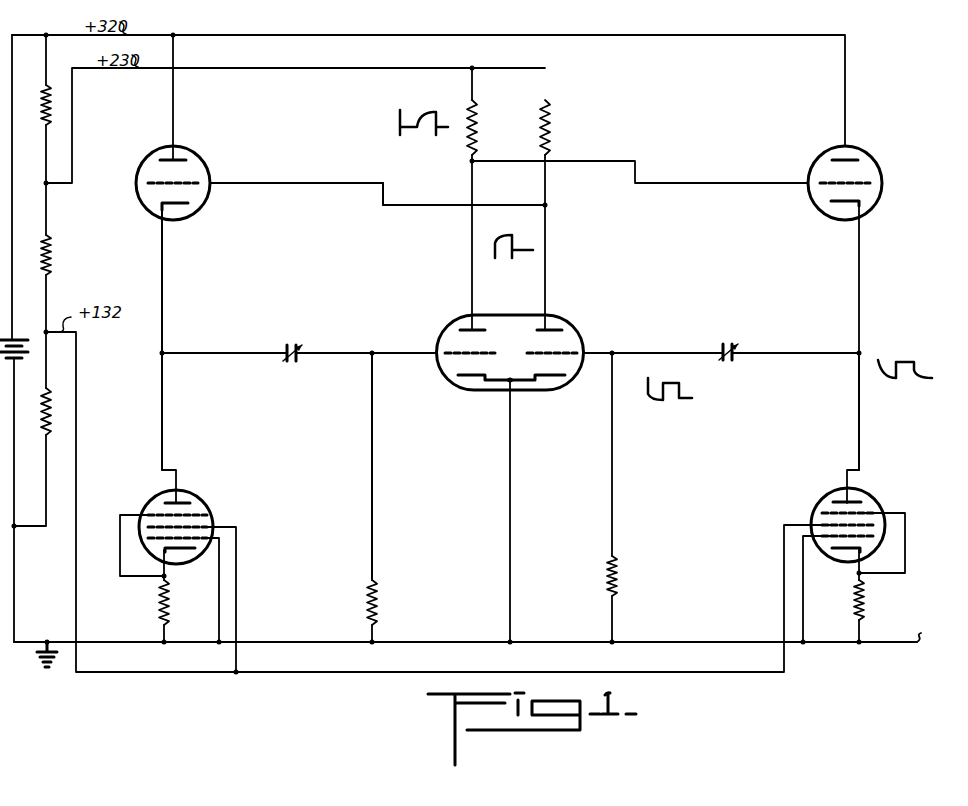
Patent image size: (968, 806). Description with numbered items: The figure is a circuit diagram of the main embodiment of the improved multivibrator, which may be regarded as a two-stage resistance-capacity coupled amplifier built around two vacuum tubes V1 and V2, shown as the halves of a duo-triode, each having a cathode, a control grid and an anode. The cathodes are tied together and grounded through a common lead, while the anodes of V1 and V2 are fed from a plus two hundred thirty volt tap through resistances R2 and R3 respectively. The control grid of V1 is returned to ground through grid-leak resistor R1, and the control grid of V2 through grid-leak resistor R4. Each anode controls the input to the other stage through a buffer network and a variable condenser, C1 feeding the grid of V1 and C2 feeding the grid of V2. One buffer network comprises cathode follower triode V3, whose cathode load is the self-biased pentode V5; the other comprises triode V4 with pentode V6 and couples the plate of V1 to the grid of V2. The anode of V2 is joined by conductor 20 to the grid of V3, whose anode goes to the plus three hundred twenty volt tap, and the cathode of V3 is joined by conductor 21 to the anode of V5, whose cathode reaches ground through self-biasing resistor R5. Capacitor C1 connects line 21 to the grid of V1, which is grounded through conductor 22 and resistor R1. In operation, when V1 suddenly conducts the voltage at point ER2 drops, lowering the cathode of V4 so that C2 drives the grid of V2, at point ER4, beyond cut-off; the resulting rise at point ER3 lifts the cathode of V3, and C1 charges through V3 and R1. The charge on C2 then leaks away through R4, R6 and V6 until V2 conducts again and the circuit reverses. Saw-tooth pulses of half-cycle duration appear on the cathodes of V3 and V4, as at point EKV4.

The vacuum tube V1 is at (438, 330).
The vacuum tube V2 is at (582, 330).
The cathode follower triode V3 is at (200, 173).
The triode V4 is at (865, 172).
The self-biased pentode V5 is at (202, 516).
The pentode V6 is at (868, 510).
The grid-leak resistor R1 is at (380, 607).
The resistance R2 is at (478, 120).
The resistance R3 is at (551, 120).
The grid-leak resistor R4 is at (620, 578).
The self biasing resistor R5 is at (160, 594).
The resistor R6 is at (868, 612).
The variable condenser C1 is at (293, 342).
The variable condenser C2 is at (734, 345).
The conductor 20 is at (350, 186).
The conductor 21 is at (162, 340).
The conductor 22 is at (372, 442).
The point ER2 is at (470, 160).
The point ER3 is at (546, 206).
The point ER4 is at (612, 353).
The point EKV4 is at (859, 353).